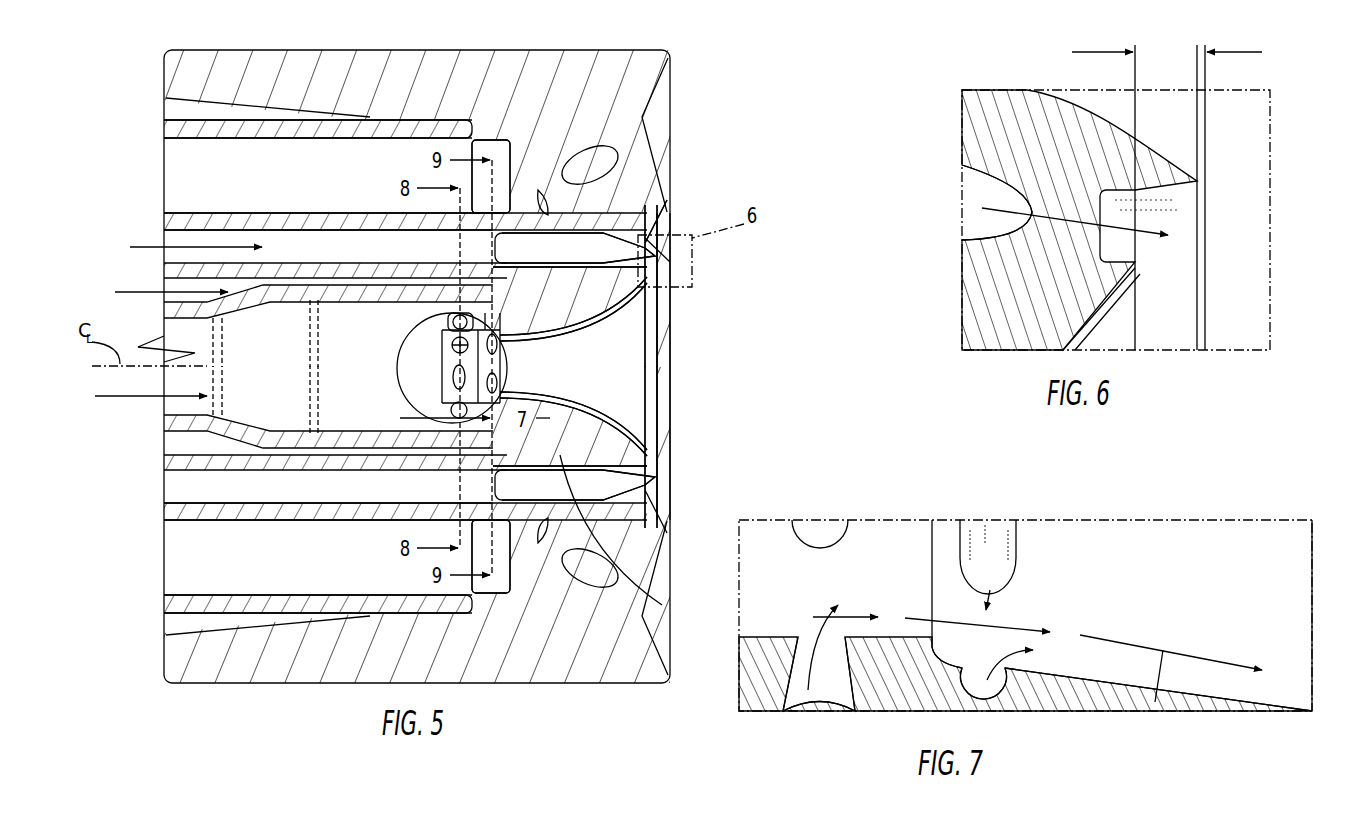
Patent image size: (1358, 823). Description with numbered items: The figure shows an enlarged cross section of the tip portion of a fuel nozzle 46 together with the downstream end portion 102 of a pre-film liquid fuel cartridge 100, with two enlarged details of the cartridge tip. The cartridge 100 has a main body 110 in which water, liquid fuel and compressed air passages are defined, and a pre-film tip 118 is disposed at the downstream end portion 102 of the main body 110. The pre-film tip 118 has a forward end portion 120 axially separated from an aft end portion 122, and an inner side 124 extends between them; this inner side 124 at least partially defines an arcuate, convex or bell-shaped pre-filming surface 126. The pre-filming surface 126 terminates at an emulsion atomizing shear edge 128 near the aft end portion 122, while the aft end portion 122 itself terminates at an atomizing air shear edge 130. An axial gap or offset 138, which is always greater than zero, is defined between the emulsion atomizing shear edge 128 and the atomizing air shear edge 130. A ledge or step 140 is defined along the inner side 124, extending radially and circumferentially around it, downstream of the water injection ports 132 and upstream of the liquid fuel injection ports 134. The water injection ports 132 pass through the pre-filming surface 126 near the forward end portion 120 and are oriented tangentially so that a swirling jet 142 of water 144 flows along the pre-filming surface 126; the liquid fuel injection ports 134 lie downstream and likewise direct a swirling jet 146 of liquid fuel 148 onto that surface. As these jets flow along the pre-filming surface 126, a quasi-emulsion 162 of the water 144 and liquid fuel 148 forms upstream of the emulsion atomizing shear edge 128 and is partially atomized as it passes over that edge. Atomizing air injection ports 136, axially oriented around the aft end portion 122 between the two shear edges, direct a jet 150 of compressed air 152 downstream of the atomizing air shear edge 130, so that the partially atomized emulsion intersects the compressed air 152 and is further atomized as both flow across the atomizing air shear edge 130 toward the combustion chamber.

In FIG. 5, the fuel nozzle 46 is at (580, 66).
In FIG. 5, the pre-film liquid fuel cartridge 100 is at (190, 203).
In FIG. 5, the downstream end portion 102 is at (518, 545).
In FIG. 5, the main body 110 is at (242, 524).
In FIG. 5, the pre-film tip 118 is at (583, 500).
In FIG. 6, the pre-film tip 118 is at (1015, 115).
In FIG. 7, the pre-film tip 118 is at (1240, 516).
In FIG. 5, the forward end portion 120 is at (422, 379).
In FIG. 5, the aft end portion 122 is at (670, 347).
In FIG. 5, the inner side 124 is at (634, 423).
In FIG. 5, the pre-filming surface 126 is at (570, 400).
In FIG. 7, the pre-filming surface 126 is at (1285, 588).
In FIG. 5, the emulsion atomizing shear edge 128 is at (657, 256).
In FIG. 6, the emulsion atomizing shear edge 128 is at (1130, 268).
In FIG. 5, the atomizing air shear edge 130 is at (658, 262).
In FIG. 6, the atomizing air shear edge 130 is at (1205, 178).
In FIG. 5, the water injection ports 132 is at (447, 413).
In FIG. 7, the water injection ports 132 is at (800, 688).
In FIG. 5, the liquid fuel injection ports 134 is at (505, 383).
In FIG. 7, the liquid fuel injection ports 134 is at (1012, 665).
In FIG. 5, the atomizing air injection ports 136 is at (652, 240).
In FIG. 6, the axial gap or offset 138 is at (1117, 48).
In FIG. 5, the ledge or step 140 is at (442, 350).
In FIG. 7, the ledge or step 140 is at (930, 648).
In FIG. 7, the jet of water 142 is at (848, 612).
In FIG. 5, the water 144 is at (140, 398).
In FIG. 7, the water 144 is at (825, 612).
In FIG. 7, the jet of liquid fuel 146 is at (1040, 652).
In FIG. 5, the liquid fuel 148 is at (150, 292).
In FIG. 7, the liquid fuel 148 is at (1020, 705).
In FIG. 6, the jet of compressed air 150 is at (997, 189).
In FIG. 5, the compressed air 152 is at (150, 247).
In FIG. 6, the compressed air 152 is at (1070, 212).
In FIG. 7, the quasi-emulsion 162 is at (1160, 700).